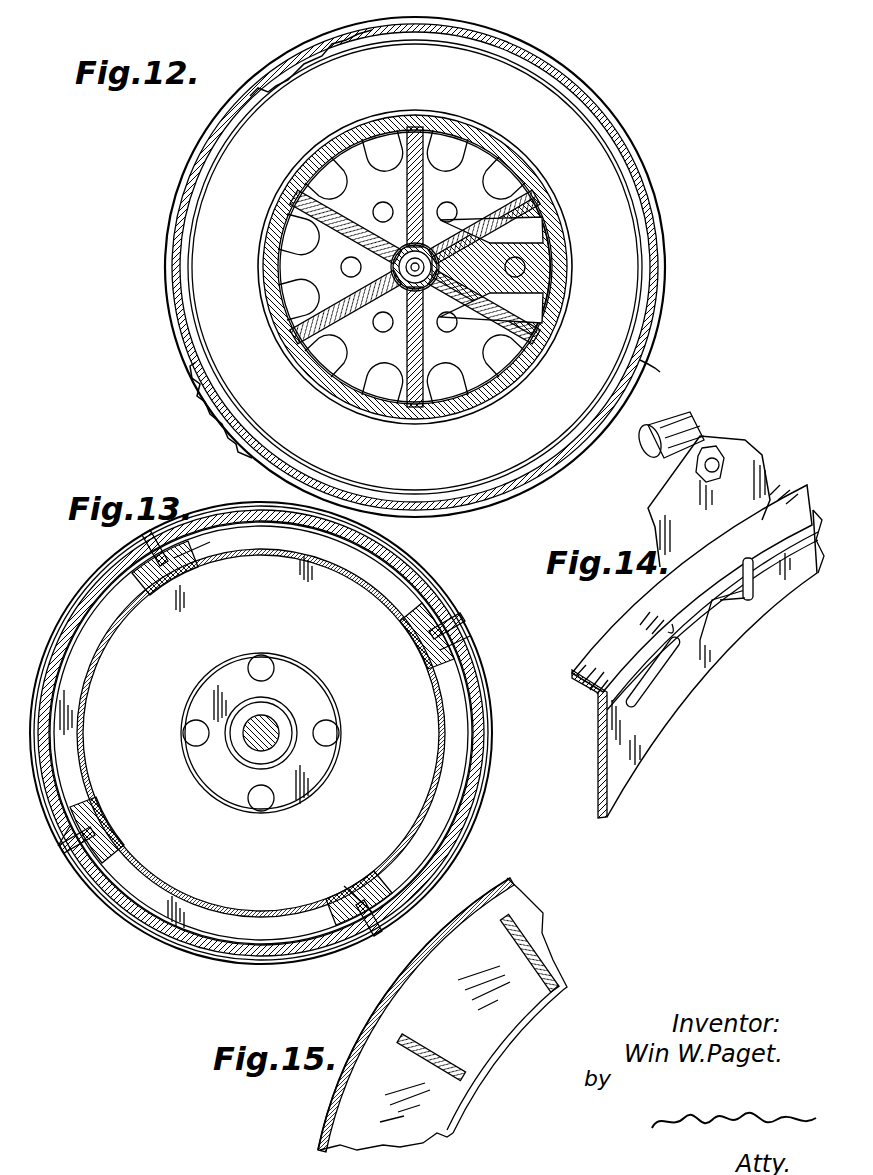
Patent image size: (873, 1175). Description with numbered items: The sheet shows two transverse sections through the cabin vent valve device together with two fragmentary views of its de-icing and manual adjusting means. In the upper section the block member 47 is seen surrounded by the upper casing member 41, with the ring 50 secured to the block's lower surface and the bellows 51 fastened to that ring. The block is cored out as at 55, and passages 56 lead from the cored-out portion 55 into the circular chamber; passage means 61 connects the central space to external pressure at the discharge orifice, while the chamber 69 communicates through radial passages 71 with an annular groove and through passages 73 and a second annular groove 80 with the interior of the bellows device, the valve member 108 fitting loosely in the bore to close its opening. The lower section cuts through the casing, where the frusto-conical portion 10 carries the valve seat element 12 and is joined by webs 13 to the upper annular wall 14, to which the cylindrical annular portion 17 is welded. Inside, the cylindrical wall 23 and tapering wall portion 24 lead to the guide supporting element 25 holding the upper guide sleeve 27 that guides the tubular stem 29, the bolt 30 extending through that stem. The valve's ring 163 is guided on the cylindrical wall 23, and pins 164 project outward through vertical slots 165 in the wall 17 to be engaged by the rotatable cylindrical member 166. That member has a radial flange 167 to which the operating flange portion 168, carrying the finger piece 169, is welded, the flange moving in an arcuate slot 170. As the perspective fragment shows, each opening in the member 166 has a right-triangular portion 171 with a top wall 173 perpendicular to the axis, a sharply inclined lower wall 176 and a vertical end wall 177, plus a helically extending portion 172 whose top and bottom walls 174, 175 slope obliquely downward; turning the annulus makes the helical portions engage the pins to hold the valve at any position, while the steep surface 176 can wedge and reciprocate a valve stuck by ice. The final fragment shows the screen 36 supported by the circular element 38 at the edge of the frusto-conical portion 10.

In FIG. 15, the annular outer frusto-conical portion 10 is at (472, 1034).
In FIG. 15, the valve seat element 12 is at (480, 1072).
In FIG. 15, the webs 13 is at (448, 1080).
In FIG. 13, the upper annular wall 14 is at (490, 734).
In FIG. 13, the cylindrical annular portion 17 is at (480, 690).
In FIG. 13, the cylindrical wall 23 is at (378, 600).
In FIG. 13, the tapering wall portion 24 is at (220, 890).
In FIG. 13, the guide supporting element 25 is at (236, 752).
In FIG. 13, the upper guide sleeve 27 is at (280, 728).
In FIG. 13, the tubular sleevelike stem 29 is at (252, 762).
In FIG. 13, the bolt 30 is at (280, 790).
In FIG. 15, the screen 36 is at (322, 1108).
In FIG. 15, the circular element 38 is at (362, 1008).
In FIG. 12, the upper casing member 41 is at (630, 146).
In FIG. 12, the block member 47 is at (548, 286).
In FIG. 12, the ring 50 is at (566, 218).
In FIG. 12, the bellows 51 is at (558, 118).
In FIG. 12, the cored-out portion 55 is at (350, 378).
In FIG. 12, the passages 56 is at (452, 330).
In FIG. 12, the passage means 61 is at (515, 257).
In FIG. 12, the chamber 69 is at (470, 237).
In FIG. 12, the radial passages 71 is at (432, 320).
In FIG. 12, the passages 73 is at (430, 376).
In FIG. 12, the annular groove 80 is at (400, 222).
In FIG. 12, the valve member 108 is at (410, 292).
In FIG. 13, the ring 163 is at (166, 912).
In FIG. 13, the pins 164 is at (368, 930).
In FIG. 13, the vertical slots 165 is at (356, 930).
In FIG. 13, the cylindrical member 166 is at (452, 646).
In FIG. 14, the cylindrical member 166 is at (604, 746).
In FIG. 14, the radial flange 167 is at (596, 636).
In FIG. 12, the operating flange portion 168 is at (198, 396).
In FIG. 14, the operating flange portion 168 is at (752, 458).
In FIG. 14, the button or finger piece 169 is at (676, 428).
In FIG. 12, the arcuate slot 170 is at (196, 160).
In FIG. 13, the right-triangular portion 171 is at (448, 850).
In FIG. 14, the right-triangular portion 171 is at (750, 600).
In FIG. 14, the helically extending elongated portion 172 is at (666, 656).
In FIG. 14, the top wall 173 is at (700, 580).
In FIG. 14, the top wall 174 is at (668, 628).
In FIG. 14, the bottom wall 175 is at (648, 684).
In FIG. 14, the inclined lower wall 176 is at (722, 620).
In FIG. 14, the vertical end wall 177 is at (752, 590).